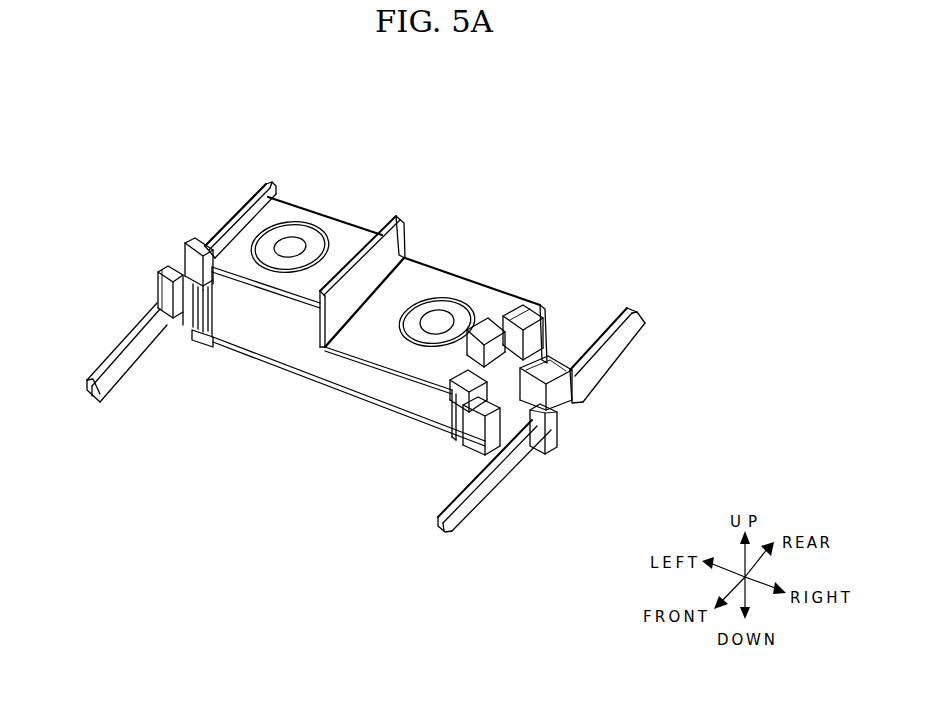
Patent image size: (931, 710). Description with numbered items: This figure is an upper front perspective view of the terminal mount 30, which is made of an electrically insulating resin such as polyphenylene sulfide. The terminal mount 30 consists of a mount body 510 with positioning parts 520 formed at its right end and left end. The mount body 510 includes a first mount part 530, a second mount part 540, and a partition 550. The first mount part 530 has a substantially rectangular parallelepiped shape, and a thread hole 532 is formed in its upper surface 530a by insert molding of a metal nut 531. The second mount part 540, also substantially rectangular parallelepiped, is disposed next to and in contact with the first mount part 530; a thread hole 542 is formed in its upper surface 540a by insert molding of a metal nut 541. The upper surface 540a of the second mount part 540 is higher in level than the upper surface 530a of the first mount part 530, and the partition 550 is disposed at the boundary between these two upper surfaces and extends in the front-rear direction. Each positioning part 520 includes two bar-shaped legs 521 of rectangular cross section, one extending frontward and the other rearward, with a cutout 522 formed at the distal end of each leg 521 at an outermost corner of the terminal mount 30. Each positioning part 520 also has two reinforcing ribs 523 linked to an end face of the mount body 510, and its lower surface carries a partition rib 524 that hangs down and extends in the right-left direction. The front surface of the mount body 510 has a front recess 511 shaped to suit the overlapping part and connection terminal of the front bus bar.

The terminal mount 30 is at (515, 188).
The mount body 510 is at (294, 376).
The front recess 511 is at (278, 342).
The positioning part 520 is at (138, 304).
The bar-shaped leg 521 is at (114, 345).
The cutout 522 is at (270, 186).
The reinforcing rib 523 is at (164, 274).
The partition rib 524 is at (563, 450).
The first mount part 530 is at (515, 297).
The upper surface of first mount part 530a is at (418, 262).
The metal nut 531 is at (410, 364).
The thread hole 532 is at (440, 322).
The second mount part 540 is at (362, 213).
The upper surface of second mount part 540a is at (300, 212).
The metal nut 541 is at (249, 246).
The thread hole 542 is at (290, 247).
The partition 550 is at (360, 367).